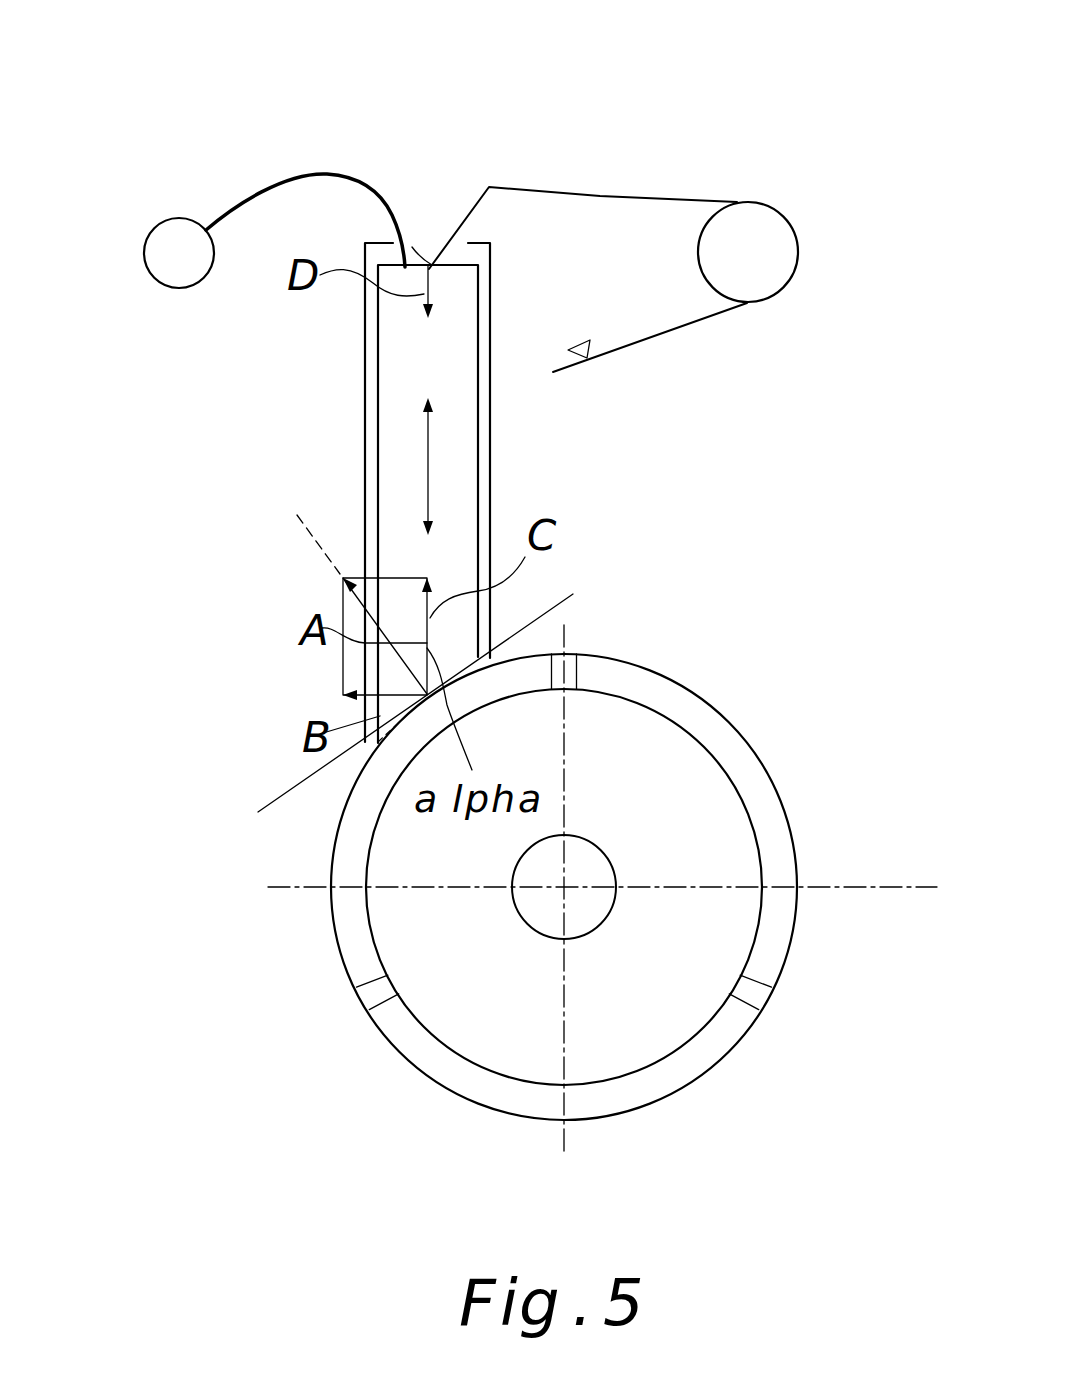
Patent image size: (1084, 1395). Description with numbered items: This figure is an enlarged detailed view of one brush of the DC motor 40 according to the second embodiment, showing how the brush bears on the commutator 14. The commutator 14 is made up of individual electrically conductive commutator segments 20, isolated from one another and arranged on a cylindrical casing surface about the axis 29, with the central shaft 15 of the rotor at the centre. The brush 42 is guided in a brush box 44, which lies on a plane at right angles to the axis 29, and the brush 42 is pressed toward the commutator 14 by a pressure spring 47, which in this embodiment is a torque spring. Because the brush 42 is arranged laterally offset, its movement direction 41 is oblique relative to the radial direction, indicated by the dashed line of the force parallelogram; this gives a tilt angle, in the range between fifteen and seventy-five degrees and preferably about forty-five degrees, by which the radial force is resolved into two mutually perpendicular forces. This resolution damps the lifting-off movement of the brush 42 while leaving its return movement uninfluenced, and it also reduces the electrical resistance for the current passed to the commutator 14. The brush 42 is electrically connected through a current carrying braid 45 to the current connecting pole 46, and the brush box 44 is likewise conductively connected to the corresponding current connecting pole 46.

The commutator 14 is at (290, 1007).
The central shaft 15 is at (593, 919).
The commutator segments 20 is at (438, 1064).
The axis 29 is at (565, 887).
The DC motor 40 is at (778, 601).
The movement direction 41 is at (428, 472).
The brush 42 is at (393, 517).
The brush box 44 is at (365, 432).
The current carrying braid 45 is at (327, 174).
The current connecting pole 46 is at (167, 245).
The pressure spring 47 is at (603, 190).